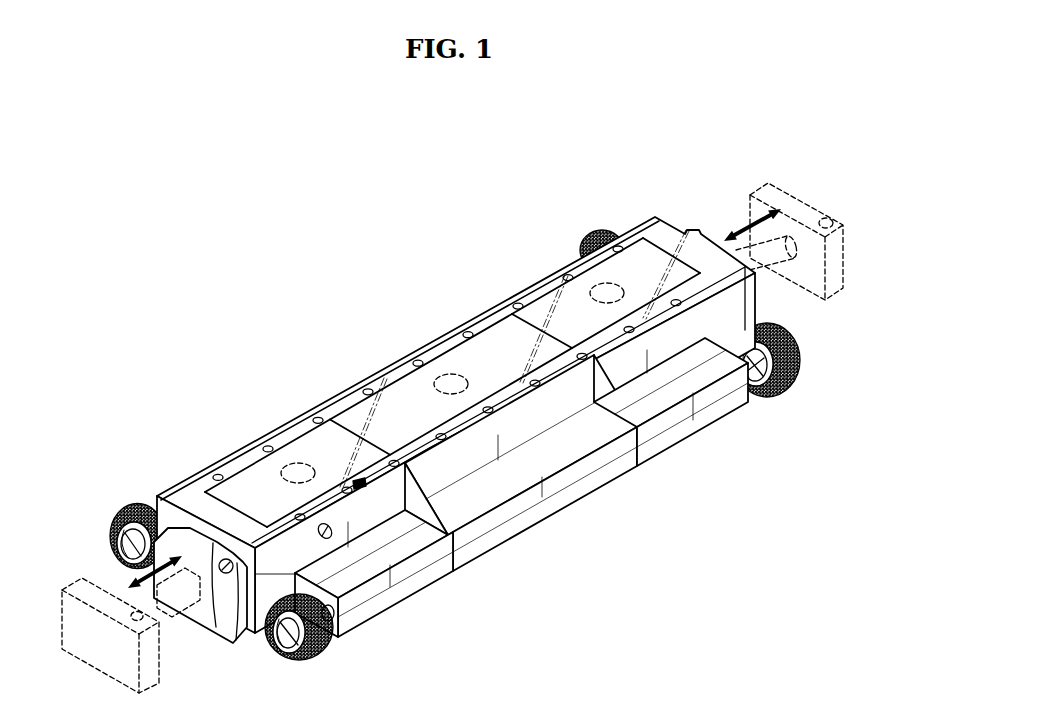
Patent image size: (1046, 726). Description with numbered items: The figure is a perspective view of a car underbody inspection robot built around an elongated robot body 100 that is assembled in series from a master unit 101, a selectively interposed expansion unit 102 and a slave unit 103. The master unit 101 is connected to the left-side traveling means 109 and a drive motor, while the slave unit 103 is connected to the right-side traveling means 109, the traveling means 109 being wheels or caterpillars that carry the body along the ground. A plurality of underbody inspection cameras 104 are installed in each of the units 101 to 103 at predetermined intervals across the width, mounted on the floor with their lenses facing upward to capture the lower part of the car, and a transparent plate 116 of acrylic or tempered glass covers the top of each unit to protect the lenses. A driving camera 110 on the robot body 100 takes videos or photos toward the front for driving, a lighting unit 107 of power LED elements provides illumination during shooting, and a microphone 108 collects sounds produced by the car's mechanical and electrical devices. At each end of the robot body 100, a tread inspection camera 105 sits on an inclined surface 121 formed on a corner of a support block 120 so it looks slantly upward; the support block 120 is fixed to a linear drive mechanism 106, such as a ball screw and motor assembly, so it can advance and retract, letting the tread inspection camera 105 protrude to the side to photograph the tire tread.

The robot body 100 is at (296, 283).
The master unit 101 is at (396, 633).
The expansion unit 102 is at (573, 534).
The slave unit 103 is at (718, 447).
The underbody inspection camera 104 is at (295, 458).
The tread inspection camera 105 is at (232, 573).
The linear drive mechanism 106 is at (166, 610).
The lighting unit 107 is at (624, 236).
The microphone 108 is at (362, 490).
The traveling means 109 is at (114, 502).
The driving camera 110 is at (331, 540).
The transparent plate 116 is at (242, 466).
The support block 120 is at (177, 614).
The inclined surface 121 is at (218, 572).